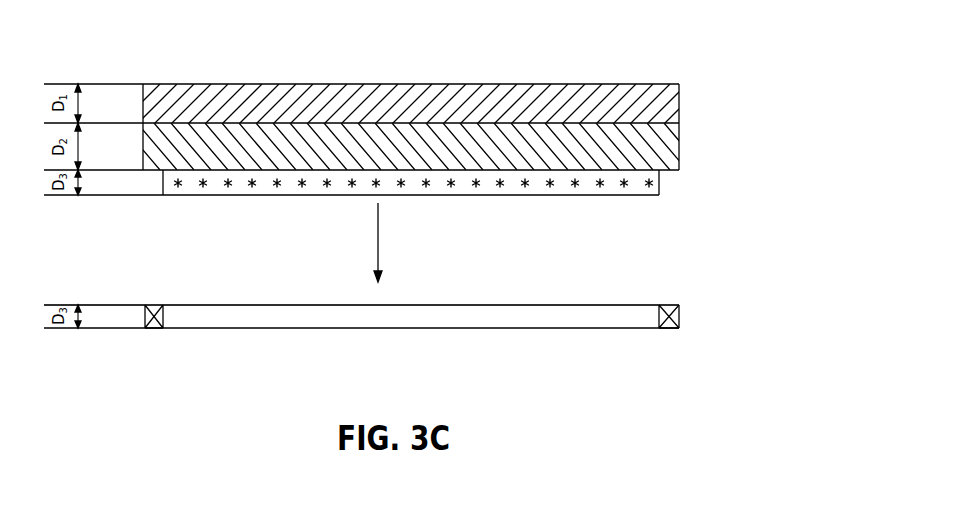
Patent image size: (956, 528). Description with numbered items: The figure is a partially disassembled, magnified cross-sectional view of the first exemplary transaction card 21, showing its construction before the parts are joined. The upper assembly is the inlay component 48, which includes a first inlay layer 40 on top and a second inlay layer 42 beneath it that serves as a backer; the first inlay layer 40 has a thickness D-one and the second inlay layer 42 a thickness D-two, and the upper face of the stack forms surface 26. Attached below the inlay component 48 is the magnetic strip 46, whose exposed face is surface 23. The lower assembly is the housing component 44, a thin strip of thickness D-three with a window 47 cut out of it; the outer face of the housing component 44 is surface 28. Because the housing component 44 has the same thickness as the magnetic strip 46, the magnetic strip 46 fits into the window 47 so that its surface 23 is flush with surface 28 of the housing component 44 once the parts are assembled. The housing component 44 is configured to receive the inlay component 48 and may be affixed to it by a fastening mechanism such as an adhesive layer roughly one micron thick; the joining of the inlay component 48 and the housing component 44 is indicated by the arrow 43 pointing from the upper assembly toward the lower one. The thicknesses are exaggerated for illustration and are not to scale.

The surface 26 is at (372, 83).
The first inlay layer 40 is at (660, 107).
The second inlay layer 42 is at (660, 150).
The inlay component 48 is at (447, 127).
The surface 23 is at (485, 197).
The magnetic strip 46 is at (583, 185).
The arrow 43 is at (378, 232).
The window 47 is at (353, 322).
The housing component 44 is at (158, 320).
The surface 28 is at (157, 327).
The card 21 is at (407, 406).